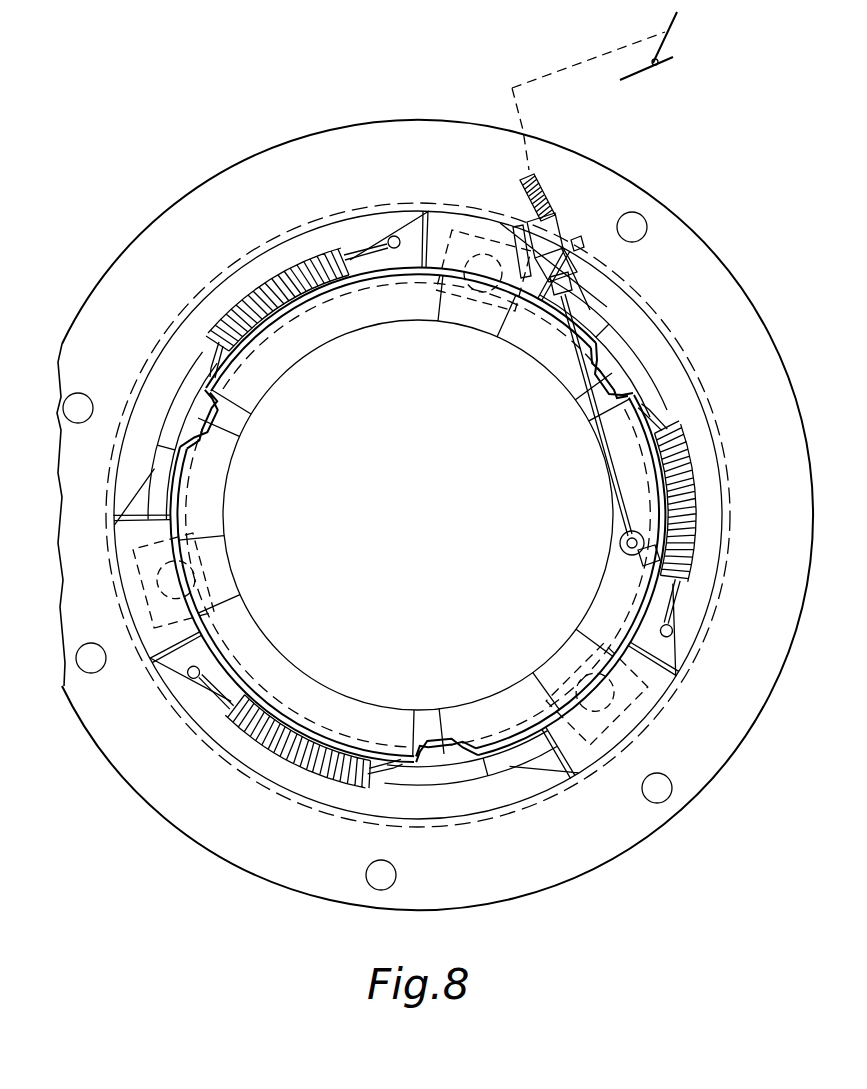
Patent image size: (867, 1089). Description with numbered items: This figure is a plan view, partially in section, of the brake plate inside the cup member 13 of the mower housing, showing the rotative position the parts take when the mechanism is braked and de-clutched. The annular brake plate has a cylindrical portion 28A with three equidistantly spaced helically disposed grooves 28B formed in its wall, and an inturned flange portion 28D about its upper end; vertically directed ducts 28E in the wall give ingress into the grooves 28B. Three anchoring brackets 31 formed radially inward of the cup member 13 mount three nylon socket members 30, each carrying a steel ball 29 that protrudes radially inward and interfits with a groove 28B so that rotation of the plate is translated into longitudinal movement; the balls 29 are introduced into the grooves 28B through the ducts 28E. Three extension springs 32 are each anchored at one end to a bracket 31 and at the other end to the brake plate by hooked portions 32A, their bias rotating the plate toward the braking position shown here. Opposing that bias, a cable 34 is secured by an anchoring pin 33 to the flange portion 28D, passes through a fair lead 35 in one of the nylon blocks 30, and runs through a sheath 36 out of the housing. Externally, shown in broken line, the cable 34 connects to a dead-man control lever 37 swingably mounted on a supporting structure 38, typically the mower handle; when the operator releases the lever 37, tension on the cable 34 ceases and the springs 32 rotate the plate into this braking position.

The cup member 13 is at (740, 717).
The cylindrical portion 28A is at (622, 548).
The helical grooves 28B is at (190, 495).
The inturned flange portion 28D is at (297, 683).
The ducts 28E is at (213, 402).
The steel balls 29 is at (465, 317).
The nylon socket members 30 is at (213, 600).
The anchoring brackets 31 is at (446, 227).
The extension springs 32 is at (293, 307).
The hooked portions 32A is at (233, 385).
The anchoring pin 33 is at (622, 538).
The cable 34 is at (553, 67).
The fair lead 35 is at (578, 268).
The sheath 36 is at (550, 183).
The dead-man control lever 37 is at (680, 12).
The supporting structure 38 is at (632, 78).